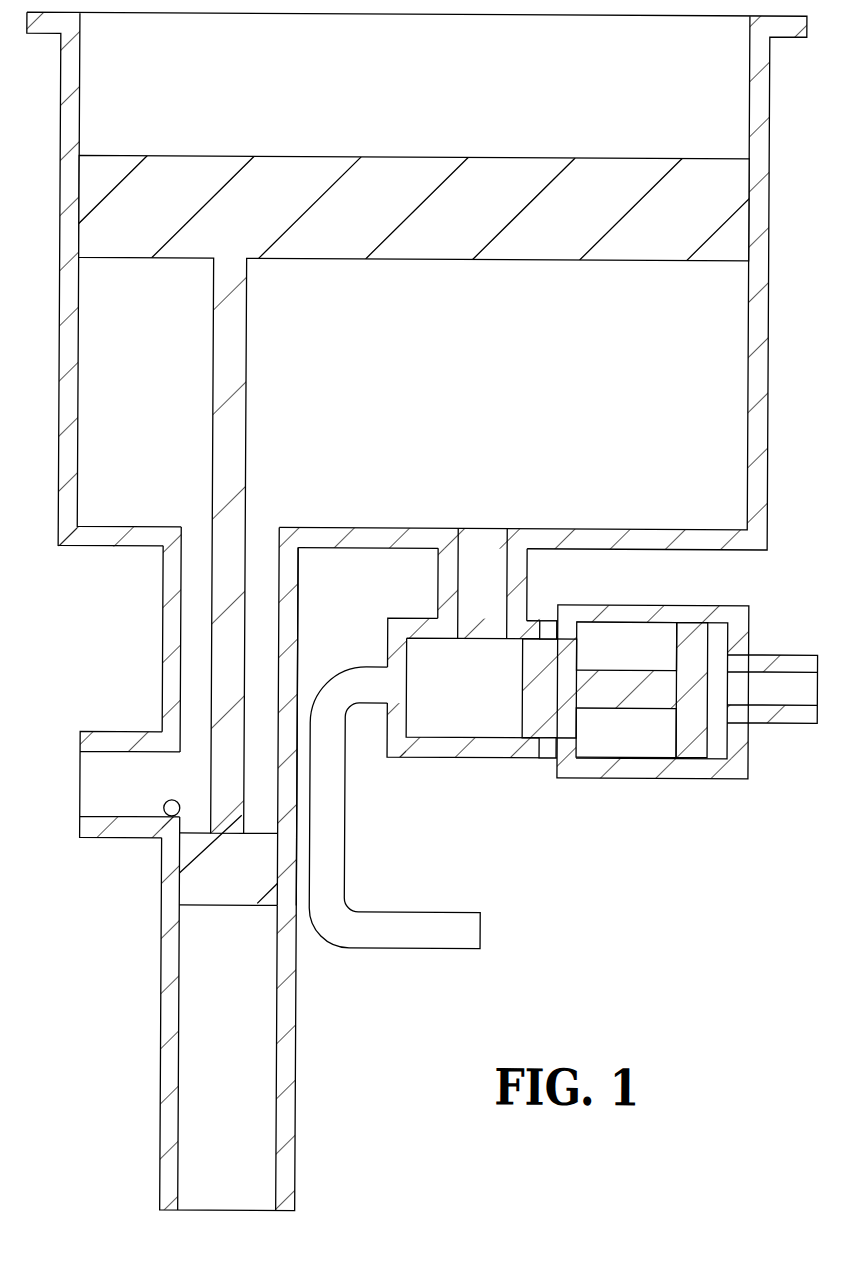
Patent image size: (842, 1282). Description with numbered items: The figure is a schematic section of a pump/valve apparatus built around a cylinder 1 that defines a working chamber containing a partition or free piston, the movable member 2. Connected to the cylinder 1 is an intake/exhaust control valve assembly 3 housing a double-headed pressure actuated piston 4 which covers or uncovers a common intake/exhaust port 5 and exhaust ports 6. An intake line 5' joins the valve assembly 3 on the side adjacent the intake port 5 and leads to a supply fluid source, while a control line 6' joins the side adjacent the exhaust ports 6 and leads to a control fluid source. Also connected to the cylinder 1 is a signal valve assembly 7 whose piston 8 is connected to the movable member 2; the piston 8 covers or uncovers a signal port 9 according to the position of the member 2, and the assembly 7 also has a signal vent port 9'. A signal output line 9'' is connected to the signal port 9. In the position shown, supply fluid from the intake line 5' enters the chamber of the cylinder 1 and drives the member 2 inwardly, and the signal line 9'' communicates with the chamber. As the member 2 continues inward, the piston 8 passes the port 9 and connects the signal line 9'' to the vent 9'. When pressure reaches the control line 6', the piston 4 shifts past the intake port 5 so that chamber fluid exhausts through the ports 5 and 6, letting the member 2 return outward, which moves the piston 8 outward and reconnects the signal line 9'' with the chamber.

The cylinder 1 is at (481, 388).
The movable member 2 is at (376, 219).
The intake/exhaust control valve assembly 3 is at (508, 775).
The double-headed pressure actuated piston 4 is at (580, 665).
The common intake/exhaust port 5 is at (458, 583).
The intake line 5' is at (395, 808).
The exhaust ports 6 is at (550, 695).
The control line 6' is at (687, 698).
The signal valve assembly 7 is at (166, 651).
The piston 8 is at (248, 887).
The signal port 9 is at (144, 849).
The signal vent port 9' is at (229, 879).
The signal output line 9'' is at (102, 784).